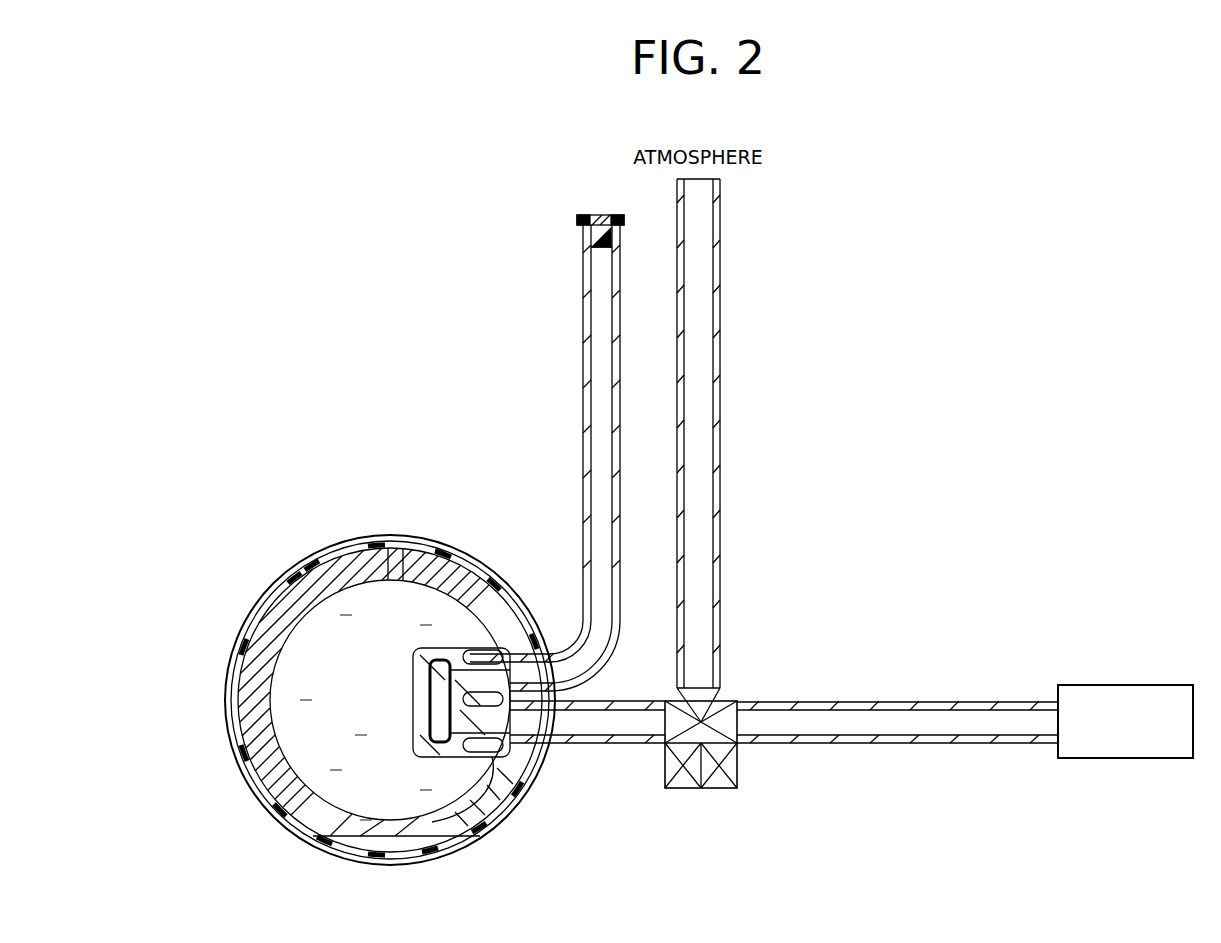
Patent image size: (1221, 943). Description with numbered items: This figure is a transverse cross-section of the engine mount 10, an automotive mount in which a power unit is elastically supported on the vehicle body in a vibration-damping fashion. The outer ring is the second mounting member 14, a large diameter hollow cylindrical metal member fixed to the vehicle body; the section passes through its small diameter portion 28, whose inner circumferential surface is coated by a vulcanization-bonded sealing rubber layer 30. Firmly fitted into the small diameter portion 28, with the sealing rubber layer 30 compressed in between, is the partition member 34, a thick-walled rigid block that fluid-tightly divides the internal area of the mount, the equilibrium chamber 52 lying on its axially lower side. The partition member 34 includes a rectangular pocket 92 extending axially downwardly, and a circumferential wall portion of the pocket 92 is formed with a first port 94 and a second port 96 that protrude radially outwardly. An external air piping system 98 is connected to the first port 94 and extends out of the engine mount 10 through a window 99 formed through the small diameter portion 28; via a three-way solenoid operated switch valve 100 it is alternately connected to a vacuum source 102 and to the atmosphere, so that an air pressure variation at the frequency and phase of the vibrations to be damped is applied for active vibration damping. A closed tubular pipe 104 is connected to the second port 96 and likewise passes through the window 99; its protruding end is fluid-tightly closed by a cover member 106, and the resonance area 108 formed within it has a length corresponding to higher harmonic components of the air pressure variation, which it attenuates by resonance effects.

The engine mount 10 is at (295, 510).
The second mounting member 14 is at (266, 584).
The small diameter portion 28 is at (366, 700).
The sealing rubber layer 30 is at (240, 760).
The partition member 34 is at (515, 806).
The equilibrium chamber 52 is at (350, 668).
The pocket 92 is at (437, 716).
The first port 94 is at (483, 752).
The second port 96 is at (483, 660).
The external air piping system 98 is at (615, 750).
The window 99 is at (558, 748).
The three-way solenoid operated switch valve 100 is at (740, 766).
The vacuum source 102 is at (1120, 758).
The closed tubular pipe 104 is at (545, 458).
The cover member 106 is at (603, 215).
The resonance area 108 is at (597, 323).